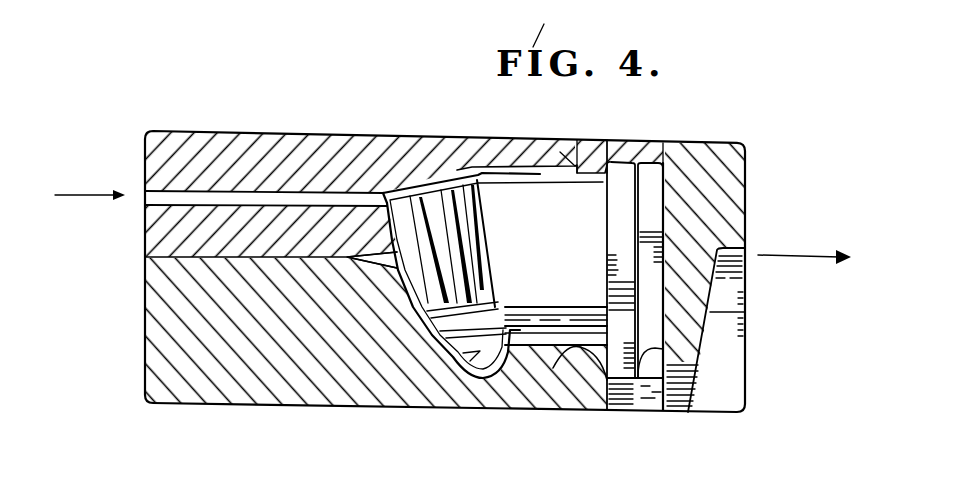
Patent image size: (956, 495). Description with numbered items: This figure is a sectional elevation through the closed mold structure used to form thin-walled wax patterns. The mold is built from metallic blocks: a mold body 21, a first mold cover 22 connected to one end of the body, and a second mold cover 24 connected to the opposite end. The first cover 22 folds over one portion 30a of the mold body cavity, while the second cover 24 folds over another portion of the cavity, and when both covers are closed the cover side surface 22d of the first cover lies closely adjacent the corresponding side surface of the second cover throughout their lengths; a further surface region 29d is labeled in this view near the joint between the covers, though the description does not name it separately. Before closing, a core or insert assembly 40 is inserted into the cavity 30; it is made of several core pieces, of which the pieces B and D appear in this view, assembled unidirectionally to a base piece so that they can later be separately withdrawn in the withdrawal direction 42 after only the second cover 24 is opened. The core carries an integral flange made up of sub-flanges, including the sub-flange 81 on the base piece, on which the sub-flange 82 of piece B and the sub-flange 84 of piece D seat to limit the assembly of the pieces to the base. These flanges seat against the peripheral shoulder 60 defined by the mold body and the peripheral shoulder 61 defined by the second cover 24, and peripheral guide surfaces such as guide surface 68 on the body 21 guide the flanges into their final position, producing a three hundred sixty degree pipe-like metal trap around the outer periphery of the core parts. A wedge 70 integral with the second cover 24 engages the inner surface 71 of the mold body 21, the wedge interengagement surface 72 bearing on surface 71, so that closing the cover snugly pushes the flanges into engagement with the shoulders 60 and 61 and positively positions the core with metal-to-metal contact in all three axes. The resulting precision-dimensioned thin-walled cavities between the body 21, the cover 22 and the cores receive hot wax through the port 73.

The mold body 21 is at (138, 300).
The first mold cover 22 is at (196, 124).
The cover side surface 22d is at (590, 150).
The second mold cover 24 is at (744, 139).
The seat recess 29d is at (556, 154).
The cavity 30 is at (413, 163).
The portion of the mold body cavity 30a is at (493, 380).
The core or insert assembly 40 is at (455, 165).
The withdrawal direction 42 is at (813, 256).
The peripheral shoulder 60 is at (590, 358).
The peripheral shoulder 61 is at (646, 160).
The peripheral guide surface 68 is at (638, 330).
The wedge 70 is at (714, 287).
The inner surface of mold body 71 is at (700, 347).
The wedge interengagement surface 72 is at (745, 313).
The port 73 is at (203, 192).
The sub-flange 81 is at (650, 183).
The sub-flange 82 is at (617, 258).
The sub-flange 84 is at (556, 356).
The core piece B is at (535, 240).
The core piece D is at (445, 346).